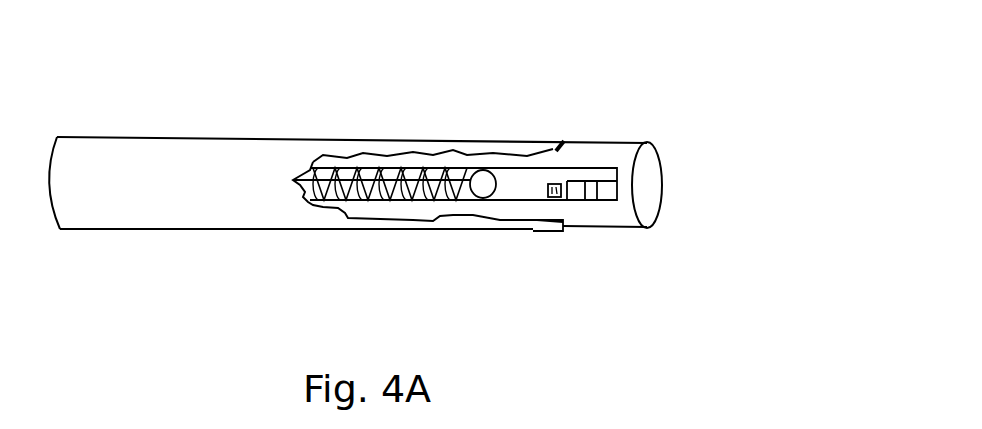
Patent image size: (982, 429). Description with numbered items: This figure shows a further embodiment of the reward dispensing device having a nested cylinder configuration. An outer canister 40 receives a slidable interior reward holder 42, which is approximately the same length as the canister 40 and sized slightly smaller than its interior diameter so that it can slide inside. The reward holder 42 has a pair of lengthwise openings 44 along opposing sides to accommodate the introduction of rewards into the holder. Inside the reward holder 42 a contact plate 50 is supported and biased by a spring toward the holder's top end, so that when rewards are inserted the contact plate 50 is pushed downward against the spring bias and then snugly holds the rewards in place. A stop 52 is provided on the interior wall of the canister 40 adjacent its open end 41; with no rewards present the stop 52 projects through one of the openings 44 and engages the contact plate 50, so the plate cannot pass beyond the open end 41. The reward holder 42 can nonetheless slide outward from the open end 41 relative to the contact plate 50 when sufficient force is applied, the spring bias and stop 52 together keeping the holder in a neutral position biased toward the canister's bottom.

The canister 40 is at (118, 213).
The open end 41 is at (562, 140).
The reward holder 42 is at (575, 157).
The lengthwise openings 44 is at (432, 189).
The contact plate 50 is at (482, 185).
The stop 52 is at (550, 188).